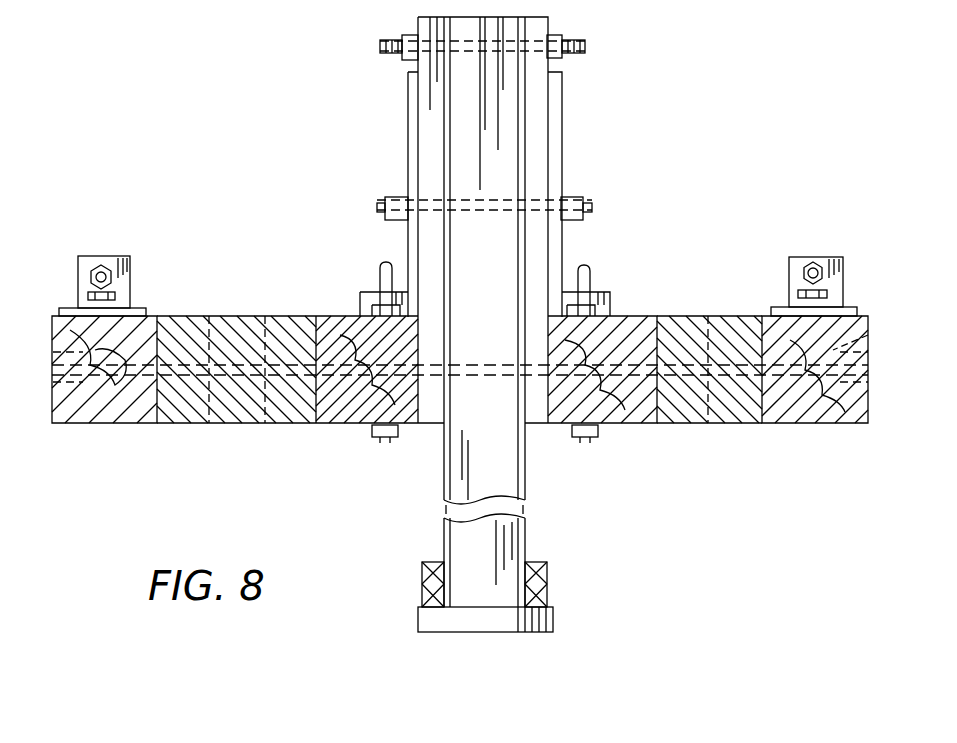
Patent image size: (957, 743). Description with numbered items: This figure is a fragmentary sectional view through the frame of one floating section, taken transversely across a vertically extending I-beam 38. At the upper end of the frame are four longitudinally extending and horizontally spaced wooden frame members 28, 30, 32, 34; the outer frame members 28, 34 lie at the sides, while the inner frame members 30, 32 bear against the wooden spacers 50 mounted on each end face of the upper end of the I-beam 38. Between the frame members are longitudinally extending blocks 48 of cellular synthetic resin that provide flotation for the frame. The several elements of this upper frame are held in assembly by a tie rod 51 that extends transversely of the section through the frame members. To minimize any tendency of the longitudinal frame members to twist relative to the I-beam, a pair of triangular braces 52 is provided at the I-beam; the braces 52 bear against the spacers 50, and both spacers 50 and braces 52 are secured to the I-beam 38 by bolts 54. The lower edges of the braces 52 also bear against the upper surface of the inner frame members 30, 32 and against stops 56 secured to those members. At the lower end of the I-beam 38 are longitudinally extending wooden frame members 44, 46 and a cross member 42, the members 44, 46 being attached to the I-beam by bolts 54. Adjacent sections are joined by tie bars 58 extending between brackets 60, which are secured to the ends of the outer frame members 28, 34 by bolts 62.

The wooden frame member 28 is at (812, 423).
The wooden frame member 30 is at (627, 425).
The wooden frame member 32 is at (337, 423).
The wooden frame member 34 is at (92, 425).
The I-beam 38 is at (445, 472).
The cross member 42 is at (517, 627).
The wooden frame member 44 is at (423, 587).
The wooden frame member 46 is at (548, 587).
The block 48 is at (213, 315).
The wooden spacer 50 is at (422, 88).
The tie rod 51 is at (872, 333).
The triangular brace 52 is at (562, 152).
The bolt 54 is at (590, 207).
The stop 56 is at (360, 315).
The tie bar 58 is at (815, 268).
The bracket 60 is at (842, 262).
The bolt 62 is at (827, 287).